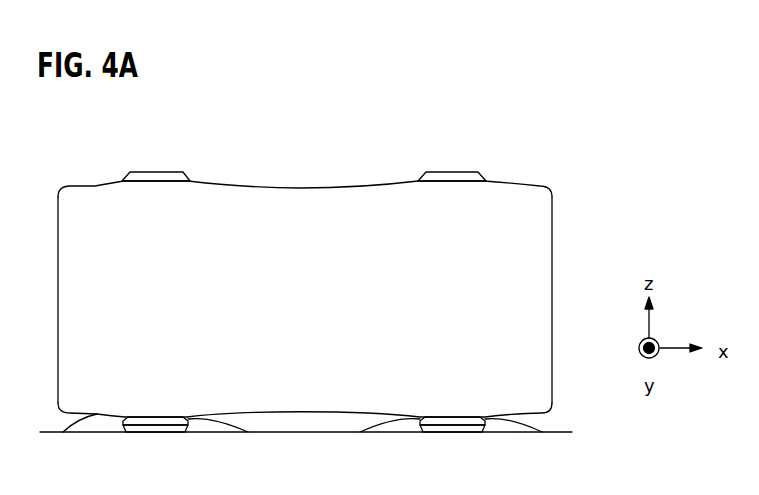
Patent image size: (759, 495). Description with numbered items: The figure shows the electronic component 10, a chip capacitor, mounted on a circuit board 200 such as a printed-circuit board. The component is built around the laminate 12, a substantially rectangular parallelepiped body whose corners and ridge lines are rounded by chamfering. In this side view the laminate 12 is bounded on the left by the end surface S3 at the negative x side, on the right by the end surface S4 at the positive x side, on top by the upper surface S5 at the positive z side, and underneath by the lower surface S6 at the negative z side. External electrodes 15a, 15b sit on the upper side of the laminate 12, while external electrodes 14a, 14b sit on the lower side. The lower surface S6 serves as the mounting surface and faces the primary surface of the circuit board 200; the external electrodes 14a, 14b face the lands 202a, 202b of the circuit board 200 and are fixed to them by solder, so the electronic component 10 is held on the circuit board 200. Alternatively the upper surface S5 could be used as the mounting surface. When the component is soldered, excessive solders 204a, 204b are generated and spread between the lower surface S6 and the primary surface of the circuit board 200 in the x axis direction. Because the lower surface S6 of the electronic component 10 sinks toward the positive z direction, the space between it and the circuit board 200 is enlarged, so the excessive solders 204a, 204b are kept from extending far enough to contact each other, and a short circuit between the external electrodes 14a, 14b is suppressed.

The electronic component 10 is at (66, 134).
The laminate 12 is at (313, 303).
The external electrode 14a is at (150, 418).
The external electrode 14b is at (448, 418).
The external electrode 15a is at (189, 178).
The external electrode 15b is at (485, 178).
The circuit board 200 is at (568, 435).
The land 202a is at (155, 432).
The land 202b is at (452, 432).
The excessive solder 204a is at (204, 422).
The excessive solder 204b is at (401, 421).
The end surface S3 is at (57, 332).
The end surface S4 is at (553, 315).
The upper surface S5 is at (292, 187).
The lower surface S6 is at (268, 413).